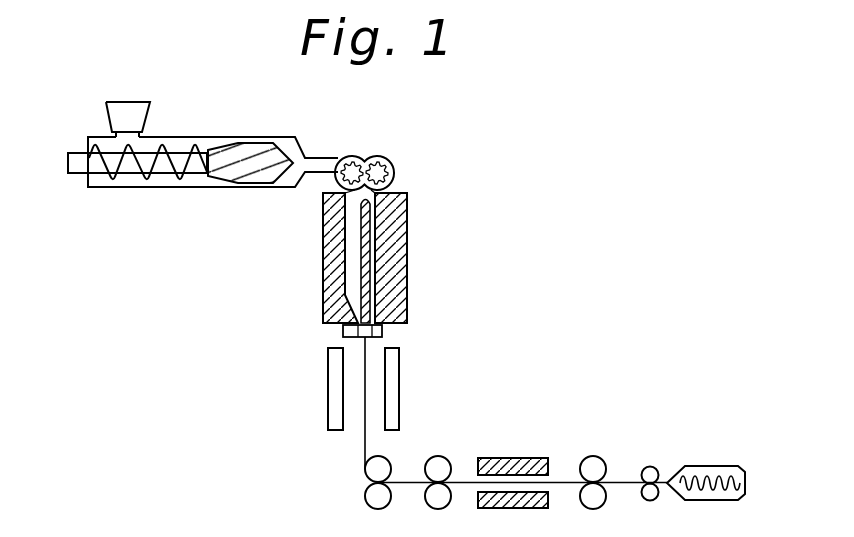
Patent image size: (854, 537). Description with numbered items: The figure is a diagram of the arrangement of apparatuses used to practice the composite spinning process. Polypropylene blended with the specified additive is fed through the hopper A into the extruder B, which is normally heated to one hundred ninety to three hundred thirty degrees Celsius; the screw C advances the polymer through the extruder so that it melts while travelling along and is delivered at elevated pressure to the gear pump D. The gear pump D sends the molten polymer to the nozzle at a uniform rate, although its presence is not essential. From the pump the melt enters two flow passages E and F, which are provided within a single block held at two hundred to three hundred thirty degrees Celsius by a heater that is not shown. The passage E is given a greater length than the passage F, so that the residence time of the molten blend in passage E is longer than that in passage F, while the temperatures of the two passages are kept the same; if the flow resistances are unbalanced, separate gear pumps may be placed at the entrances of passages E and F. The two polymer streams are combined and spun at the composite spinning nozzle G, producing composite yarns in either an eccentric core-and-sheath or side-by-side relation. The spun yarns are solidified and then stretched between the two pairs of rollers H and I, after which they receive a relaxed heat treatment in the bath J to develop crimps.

The hopper A is at (102, 110).
The extruder B is at (153, 186).
The screw C is at (224, 176).
The gear pump D is at (364, 156).
The flow passage E is at (345, 268).
The flow passage F is at (375, 266).
The composite spinning nozzle G is at (384, 330).
The rollers H is at (438, 509).
The rollers I is at (593, 509).
The bath J is at (710, 501).